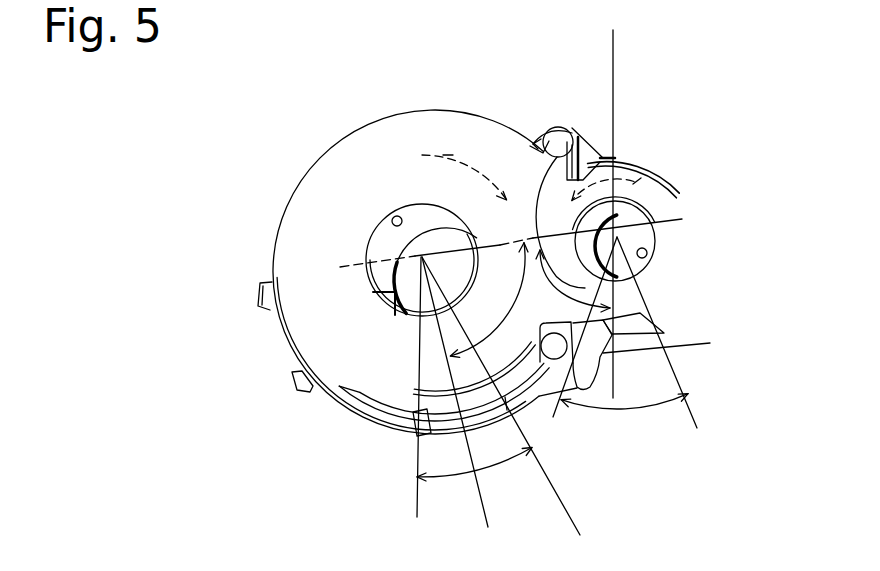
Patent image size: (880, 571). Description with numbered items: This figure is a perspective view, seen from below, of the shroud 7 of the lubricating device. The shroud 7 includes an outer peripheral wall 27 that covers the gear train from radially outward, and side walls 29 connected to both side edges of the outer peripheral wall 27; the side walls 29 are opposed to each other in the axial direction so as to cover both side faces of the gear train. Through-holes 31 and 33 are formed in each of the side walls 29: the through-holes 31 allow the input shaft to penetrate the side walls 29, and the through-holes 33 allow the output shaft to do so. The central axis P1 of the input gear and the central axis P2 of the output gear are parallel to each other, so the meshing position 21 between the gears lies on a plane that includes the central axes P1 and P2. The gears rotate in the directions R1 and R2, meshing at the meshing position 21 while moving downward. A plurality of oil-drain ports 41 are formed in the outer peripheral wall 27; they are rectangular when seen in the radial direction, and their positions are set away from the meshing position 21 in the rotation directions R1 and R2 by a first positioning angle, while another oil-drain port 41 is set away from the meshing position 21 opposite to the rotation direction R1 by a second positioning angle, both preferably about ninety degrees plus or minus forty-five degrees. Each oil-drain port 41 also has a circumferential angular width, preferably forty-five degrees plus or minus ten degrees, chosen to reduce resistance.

The shroud 7 is at (318, 167).
The side walls 29 is at (293, 260).
The through-holes 33 is at (392, 217).
The meshing position 21 is at (533, 235).
The oil-drain ports 41 is at (630, 160).
The through-holes 31 is at (646, 262).
The outer peripheral wall 27 is at (520, 395).
The central axis P1 is at (620, 232).
The central axis P2 is at (412, 248).
The rotation direction R1 is at (645, 172).
The rotation direction R2 is at (448, 155).